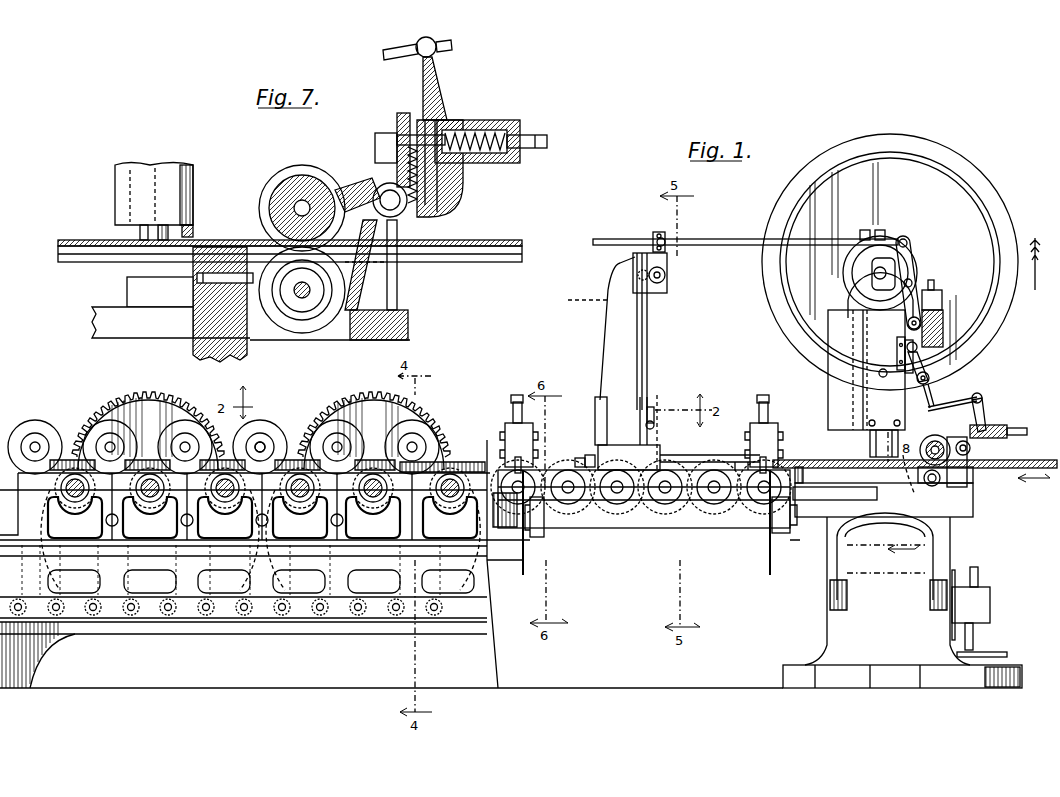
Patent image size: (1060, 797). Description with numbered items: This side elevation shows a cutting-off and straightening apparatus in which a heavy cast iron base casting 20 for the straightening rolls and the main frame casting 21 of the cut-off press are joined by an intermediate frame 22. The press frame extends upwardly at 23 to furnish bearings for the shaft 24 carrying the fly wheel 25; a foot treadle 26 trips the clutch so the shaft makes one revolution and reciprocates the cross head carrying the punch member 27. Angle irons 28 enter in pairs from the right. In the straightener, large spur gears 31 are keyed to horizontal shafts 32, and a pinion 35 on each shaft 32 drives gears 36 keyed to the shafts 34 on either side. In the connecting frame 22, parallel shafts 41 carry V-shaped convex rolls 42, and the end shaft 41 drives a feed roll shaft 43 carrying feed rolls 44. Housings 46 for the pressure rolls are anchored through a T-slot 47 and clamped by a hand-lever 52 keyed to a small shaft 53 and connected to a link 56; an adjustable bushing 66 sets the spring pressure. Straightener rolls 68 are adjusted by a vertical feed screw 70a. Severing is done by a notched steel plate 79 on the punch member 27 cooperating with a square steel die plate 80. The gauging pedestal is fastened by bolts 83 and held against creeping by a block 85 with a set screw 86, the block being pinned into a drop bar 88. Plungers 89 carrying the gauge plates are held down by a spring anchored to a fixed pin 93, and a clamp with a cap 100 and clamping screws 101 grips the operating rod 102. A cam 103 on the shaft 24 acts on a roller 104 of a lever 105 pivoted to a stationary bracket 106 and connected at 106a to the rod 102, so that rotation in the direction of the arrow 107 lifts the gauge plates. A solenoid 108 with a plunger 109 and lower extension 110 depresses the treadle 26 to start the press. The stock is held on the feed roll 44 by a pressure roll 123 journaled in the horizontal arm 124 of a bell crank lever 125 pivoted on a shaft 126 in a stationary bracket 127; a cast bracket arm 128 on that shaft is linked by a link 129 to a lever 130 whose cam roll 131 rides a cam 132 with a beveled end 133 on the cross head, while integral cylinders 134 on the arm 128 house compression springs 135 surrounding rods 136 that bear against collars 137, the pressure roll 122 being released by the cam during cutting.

In FIG. 1, the base casting 20 is at (496, 666).
In FIG. 1, the main frame casting 21 is at (902, 600).
In FIG. 1, the intermediate frame 22 is at (655, 528).
In FIG. 1, the upward extension of press frame 23 is at (928, 262).
In FIG. 1, the crank shaft 24 is at (878, 272).
In FIG. 1, the fly wheel 25 is at (940, 162).
In FIG. 1, the foot treadle 26 is at (868, 359).
In FIG. 7, the punch member 27 is at (115, 181).
In FIG. 1, the punch member 27 is at (870, 445).
In FIG. 7, the angle irons 28 is at (106, 240).
In FIG. 1, the angle irons 28 is at (1030, 460).
In FIG. 1, the large spur gears 31 is at (152, 398).
In FIG. 1, the horizontal shafts 32 is at (352, 435).
In FIG. 1, the shafts 34 is at (455, 482).
In FIG. 1, the pinion 35 is at (415, 410).
In FIG. 1, the gears 36 is at (275, 440).
In FIG. 1, the parallel horizontal shafts 41 is at (788, 533).
In FIG. 1, the V-shaped convex rolls 42 is at (563, 470).
In FIG. 1, the feed roll shaft 43 is at (968, 490).
In FIG. 7, the feed rolls 44 is at (300, 333).
In FIG. 1, the feed rolls 44 is at (960, 506).
In FIG. 1, the housings 46 is at (512, 425).
In FIG. 1, the T-slot 47 is at (737, 462).
In FIG. 1, the hand-lever 52 is at (527, 559).
In FIG. 1, the small shaft 53 is at (545, 502).
In FIG. 1, the link 56 is at (512, 477).
In FIG. 1, the adjustable bushing 66 is at (523, 400).
In FIG. 1, the straightener rolls 68 is at (258, 425).
In FIG. 1, the vertical feed screw 70a is at (282, 570).
In FIG. 7, the notched steel plate 79 is at (193, 233).
In FIG. 7, the square steel plate 80 is at (193, 293).
In FIG. 1, the square steel plate 80 is at (935, 476).
In FIG. 1, the bolts 83 is at (623, 446).
In FIG. 1, the block 85 is at (590, 454).
In FIG. 1, the set screw 86 is at (580, 458).
In FIG. 1, the drop bar 88 is at (693, 455).
In FIG. 1, the plungers 89 is at (647, 331).
In FIG. 1, the fixed pin 93 is at (653, 412).
In FIG. 1, the cap 100 is at (656, 238).
In FIG. 1, the clamping screws 101 is at (665, 241).
In FIG. 1, the operating rod 102 is at (720, 246).
In FIG. 1, the cam 103 is at (853, 290).
In FIG. 1, the roller 104 is at (914, 284).
In FIG. 1, the lever 105 is at (918, 258).
In FIG. 1, the stationary bracket 106 is at (940, 318).
In FIG. 1, the pivotal connection 106a is at (905, 239).
In FIG. 1, the arrow 107 is at (1036, 280).
In FIG. 1, the solenoid 108 is at (988, 601).
In FIG. 1, the plunger 109 is at (976, 567).
In FIG. 1, the lower extension 110 is at (974, 641).
In FIG. 1, the pressure roll 122 is at (968, 399).
In FIG. 7, the pressure roll 123 is at (264, 186).
In FIG. 7, the horizontal arm 124 is at (350, 190).
In FIG. 1, the horizontal arm 124 is at (935, 450).
In FIG. 7, the bell crank lever 125 is at (365, 178).
In FIG. 7, the pin or shaft 126 is at (400, 208).
In FIG. 1, the pin or shaft 126 is at (971, 448).
In FIG. 7, the stationary bracket 127 is at (397, 285).
In FIG. 7, the cast bracket arm 128 is at (440, 72).
In FIG. 1, the cast bracket arm 128 is at (987, 423).
In FIG. 1, the link 129 is at (936, 398).
In FIG. 1, the lever 130 is at (931, 376).
In FIG. 1, the cam roll 131 is at (945, 338).
In FIG. 1, the cam 132 is at (905, 368).
In FIG. 1, the beveled end 133 is at (905, 350).
In FIG. 7, the cylinders 134 is at (478, 120).
In FIG. 1, the cylinders 134 is at (1005, 437).
In FIG. 7, the compression springs 135 is at (500, 122).
In FIG. 7, the rods 136 is at (540, 134).
In FIG. 1, the rods 136 is at (1014, 428).
In FIG. 7, the collar 137 is at (465, 170).